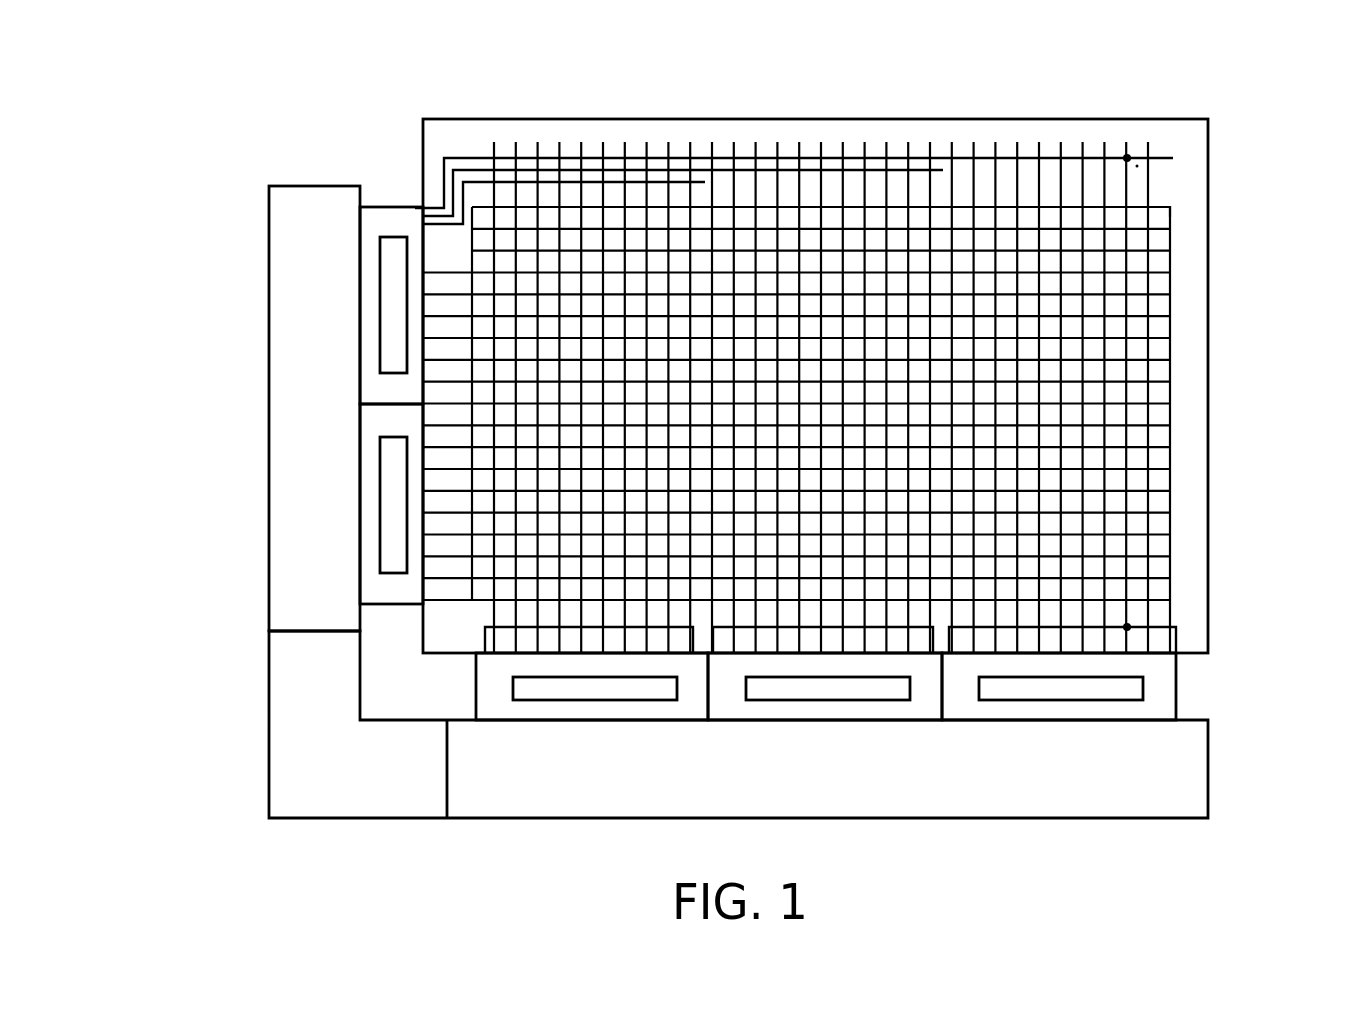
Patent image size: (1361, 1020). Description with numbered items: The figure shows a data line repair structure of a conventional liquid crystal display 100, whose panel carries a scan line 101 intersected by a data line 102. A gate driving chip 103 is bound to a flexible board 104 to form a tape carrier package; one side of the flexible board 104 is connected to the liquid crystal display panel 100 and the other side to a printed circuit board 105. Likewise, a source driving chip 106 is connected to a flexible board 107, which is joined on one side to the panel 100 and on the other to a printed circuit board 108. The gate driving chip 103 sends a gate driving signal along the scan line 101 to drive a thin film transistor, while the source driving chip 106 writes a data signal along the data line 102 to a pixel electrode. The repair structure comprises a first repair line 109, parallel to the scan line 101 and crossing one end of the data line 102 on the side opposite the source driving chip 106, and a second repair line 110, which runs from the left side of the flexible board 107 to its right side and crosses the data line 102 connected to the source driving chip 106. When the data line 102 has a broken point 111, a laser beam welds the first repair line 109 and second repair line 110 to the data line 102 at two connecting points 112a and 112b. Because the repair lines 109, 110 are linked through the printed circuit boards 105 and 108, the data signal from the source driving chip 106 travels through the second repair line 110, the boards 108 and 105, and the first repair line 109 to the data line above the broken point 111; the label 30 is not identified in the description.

The liquid crystal display 100 is at (1190, 468).
The scan line 101 is at (1160, 230).
The data line 102 is at (1127, 158).
The gate driving chip 103 is at (379, 305).
The flexible board 104 is at (372, 374).
The printed circuit board 105 is at (292, 223).
The source driving chip 106 is at (1045, 702).
The flexible board 107 is at (1117, 710).
The printed circuit board 108 is at (1193, 767).
The first repair line 109 is at (1008, 158).
The second repair line 110 is at (963, 630).
The broken point 111 is at (1128, 326).
The connecting point 112a is at (1138, 167).
The connecting point 112b is at (1131, 625).
The corner of display area 30 is at (1168, 207).